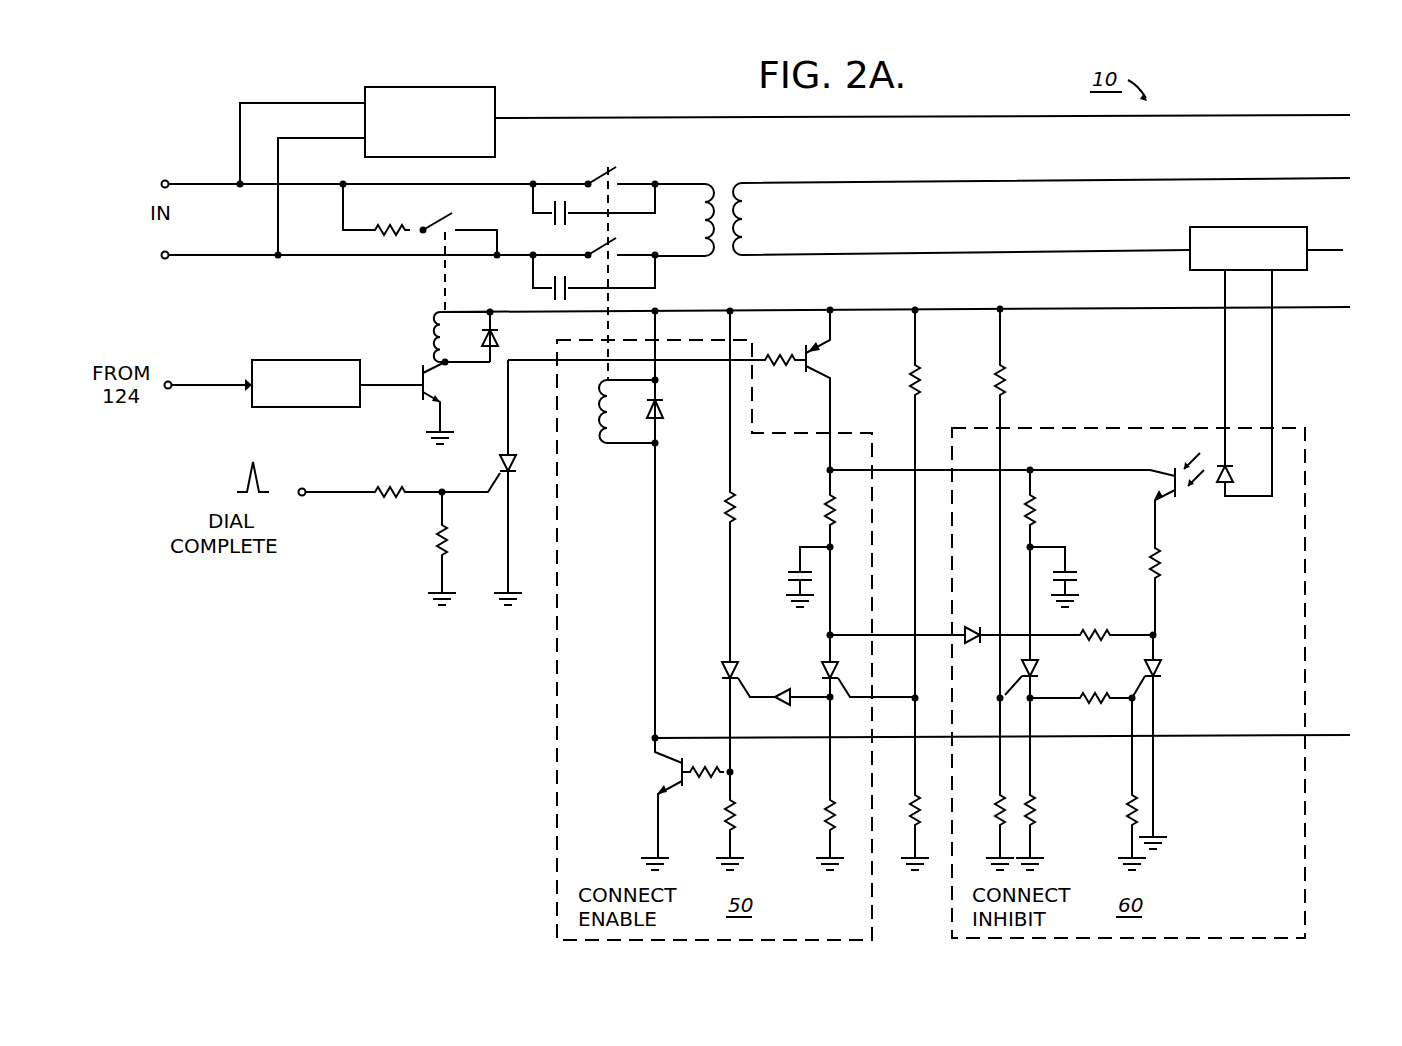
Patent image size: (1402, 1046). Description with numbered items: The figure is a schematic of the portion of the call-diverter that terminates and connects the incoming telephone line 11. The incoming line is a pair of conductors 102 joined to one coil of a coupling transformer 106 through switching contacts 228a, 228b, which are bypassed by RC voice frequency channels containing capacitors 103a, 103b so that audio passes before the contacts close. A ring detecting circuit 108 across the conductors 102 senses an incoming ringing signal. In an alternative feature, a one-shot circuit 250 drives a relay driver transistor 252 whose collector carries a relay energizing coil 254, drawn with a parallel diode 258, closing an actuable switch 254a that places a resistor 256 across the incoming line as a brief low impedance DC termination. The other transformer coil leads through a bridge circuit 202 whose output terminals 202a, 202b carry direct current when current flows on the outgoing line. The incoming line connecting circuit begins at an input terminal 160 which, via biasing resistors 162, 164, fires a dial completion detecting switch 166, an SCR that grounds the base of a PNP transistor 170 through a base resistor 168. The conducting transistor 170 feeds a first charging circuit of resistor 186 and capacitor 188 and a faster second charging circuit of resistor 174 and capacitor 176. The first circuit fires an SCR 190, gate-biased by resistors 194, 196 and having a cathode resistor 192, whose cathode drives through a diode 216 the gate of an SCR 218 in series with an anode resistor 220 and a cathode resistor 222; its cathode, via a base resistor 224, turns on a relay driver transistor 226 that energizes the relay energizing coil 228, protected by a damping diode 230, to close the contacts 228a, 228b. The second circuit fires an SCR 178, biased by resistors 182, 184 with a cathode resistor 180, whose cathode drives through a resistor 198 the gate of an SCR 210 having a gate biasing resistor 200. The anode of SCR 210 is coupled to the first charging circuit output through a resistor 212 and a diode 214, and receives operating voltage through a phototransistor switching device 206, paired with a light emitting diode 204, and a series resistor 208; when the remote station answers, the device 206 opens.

The incoming telephone line 11 is at (147, 193).
The incoming line conductors 102 is at (316, 192).
The capacitor 103a is at (548, 209).
The capacitor 103b is at (548, 290).
The coupling transformer 106 is at (723, 180).
The ring detecting circuit 108 is at (445, 87).
The input terminal 160 is at (329, 474).
The biasing resistor 162 is at (389, 488).
The biasing resistor 164 is at (434, 545).
The dial completion detecting switch 166 is at (490, 464).
The base resistor 168 is at (774, 364).
The transistor 170 is at (821, 356).
The resistor 174 is at (1033, 508).
The capacitor 176 is at (1075, 575).
The solid-state switch 178 is at (1040, 664).
The cathode resistor 180 is at (1035, 810).
The resistor 182 is at (1003, 383).
The resistor 184 is at (996, 806).
The resistor 186 is at (826, 508).
The capacitor 188 is at (788, 575).
The SCR 190 is at (822, 664).
The cathode resistor 192 is at (824, 808).
The resistor 194 is at (912, 383).
The resistor 196 is at (913, 808).
The resistor 198 is at (1092, 706).
The gate biasing resistor 200 is at (1124, 806).
The bridge circuit 202 is at (1234, 229).
The bridge output terminal 202a is at (1275, 291).
The bridge output terminal 202b is at (1223, 291).
The light emitting diode 204 is at (1222, 466).
The switching device 206 is at (1162, 502).
The resistor 208 is at (1160, 570).
The solid-state actuable switch 210 is at (1162, 664).
The resistor 212 is at (1077, 634).
The diode 214 is at (975, 628).
The diode 216 is at (780, 690).
The actuable switch 218 is at (720, 672).
The anode resistor 220 is at (726, 508).
The cathode resistor 222 is at (734, 816).
The base resistor 224 is at (708, 784).
The relay driver transistor 226 is at (672, 770).
The relay energizing coil 228 is at (605, 430).
The switching contact 228a is at (602, 176).
The switching contact 228b is at (602, 248).
The damping diode 230 is at (664, 410).
The one-shot circuit 250 is at (298, 360).
The relay driver transistor 252 is at (420, 369).
The relay energizing coil 254 is at (435, 332).
The actuable switch 254a is at (440, 218).
The resistor 256 is at (374, 234).
The diode 258 is at (500, 338).